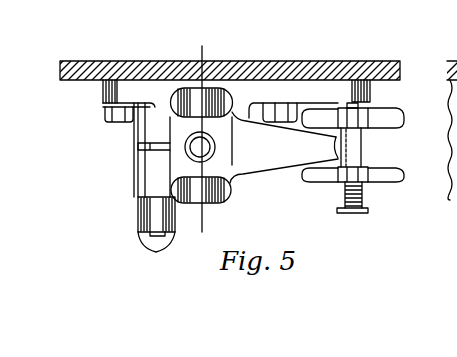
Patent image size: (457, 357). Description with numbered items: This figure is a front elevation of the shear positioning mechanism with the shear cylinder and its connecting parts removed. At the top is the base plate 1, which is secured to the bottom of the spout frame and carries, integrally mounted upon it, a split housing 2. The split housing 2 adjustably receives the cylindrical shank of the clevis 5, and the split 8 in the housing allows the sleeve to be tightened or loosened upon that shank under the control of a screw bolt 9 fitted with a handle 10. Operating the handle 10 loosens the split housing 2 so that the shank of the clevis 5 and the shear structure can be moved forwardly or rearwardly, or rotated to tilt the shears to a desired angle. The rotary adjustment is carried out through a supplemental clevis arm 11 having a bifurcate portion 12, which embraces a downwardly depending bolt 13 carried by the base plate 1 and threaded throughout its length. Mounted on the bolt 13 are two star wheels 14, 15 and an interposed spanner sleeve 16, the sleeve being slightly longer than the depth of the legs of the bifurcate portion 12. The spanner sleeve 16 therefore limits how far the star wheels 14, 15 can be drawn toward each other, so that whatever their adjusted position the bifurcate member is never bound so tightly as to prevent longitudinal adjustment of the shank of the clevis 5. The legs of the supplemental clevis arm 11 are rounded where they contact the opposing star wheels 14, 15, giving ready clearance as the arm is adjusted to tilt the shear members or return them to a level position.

The base plate 1 is at (376, 92).
The split housing 2 is at (150, 172).
The clevis 5 is at (222, 92).
The split 8 is at (139, 145).
The screw bolt 9 is at (155, 235).
The handle 10 is at (158, 246).
The supplemental clevis arm 11 is at (277, 163).
The bifurcate portion 12 is at (340, 151).
The bolt 13 is at (363, 193).
The star wheel 14 is at (397, 118).
The star wheel 15 is at (404, 177).
The spanner sleeve 16 is at (364, 148).